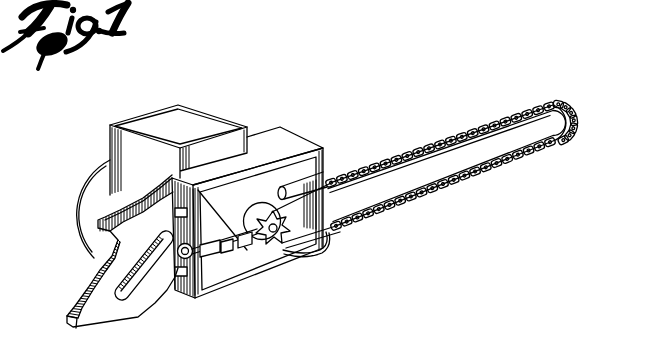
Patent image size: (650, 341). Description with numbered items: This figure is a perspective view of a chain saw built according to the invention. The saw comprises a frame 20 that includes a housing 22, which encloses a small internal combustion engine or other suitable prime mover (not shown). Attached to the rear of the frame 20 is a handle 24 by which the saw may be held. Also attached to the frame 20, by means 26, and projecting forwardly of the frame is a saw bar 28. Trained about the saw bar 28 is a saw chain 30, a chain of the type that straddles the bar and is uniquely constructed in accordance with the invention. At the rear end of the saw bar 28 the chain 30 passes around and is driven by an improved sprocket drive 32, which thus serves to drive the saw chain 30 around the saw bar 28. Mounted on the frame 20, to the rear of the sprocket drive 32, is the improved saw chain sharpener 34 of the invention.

The frame 20 is at (248, 124).
The housing 22 is at (181, 108).
The handle 24 is at (93, 273).
The means 26 is at (327, 182).
The saw bar 28 is at (430, 160).
The saw chain 30 is at (419, 197).
The sprocket drive 32 is at (263, 241).
The saw chain sharpener 34 is at (189, 276).